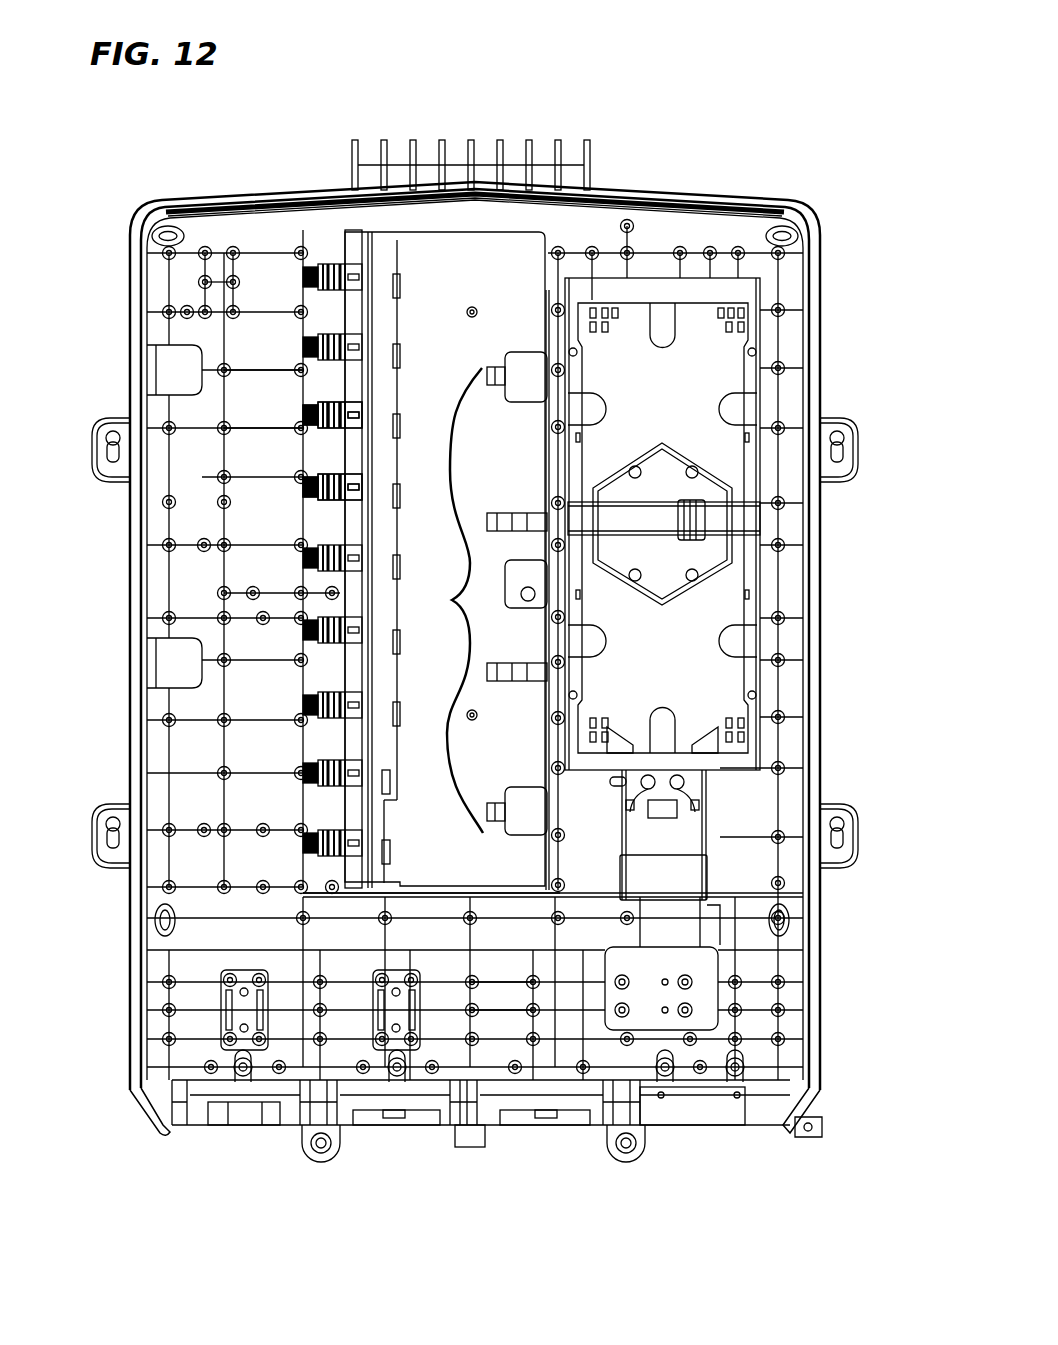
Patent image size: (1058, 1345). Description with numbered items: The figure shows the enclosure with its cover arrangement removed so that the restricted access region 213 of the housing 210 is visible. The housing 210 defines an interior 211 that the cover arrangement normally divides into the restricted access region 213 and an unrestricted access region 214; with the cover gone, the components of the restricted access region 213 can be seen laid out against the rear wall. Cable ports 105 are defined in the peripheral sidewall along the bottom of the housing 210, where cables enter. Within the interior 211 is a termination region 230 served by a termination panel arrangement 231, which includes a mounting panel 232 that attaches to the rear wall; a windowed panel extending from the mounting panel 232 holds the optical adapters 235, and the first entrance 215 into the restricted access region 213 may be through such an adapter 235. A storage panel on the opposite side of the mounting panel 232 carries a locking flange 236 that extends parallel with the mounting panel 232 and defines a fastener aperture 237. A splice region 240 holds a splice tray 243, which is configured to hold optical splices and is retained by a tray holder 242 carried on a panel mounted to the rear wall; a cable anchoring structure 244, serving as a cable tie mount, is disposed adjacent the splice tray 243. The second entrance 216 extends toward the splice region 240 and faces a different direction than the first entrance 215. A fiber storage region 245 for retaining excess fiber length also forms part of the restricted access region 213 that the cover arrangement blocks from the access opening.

The cable port 105 is at (218, 1130).
The housing 210 is at (818, 662).
The interior 211 is at (497, 1022).
The restricted access region 213 is at (792, 222).
The unrestricted access region 214 is at (261, 355).
The first entrance 215 is at (293, 703).
The second entrance 216 is at (664, 914).
The termination region 230 is at (316, 522).
The termination panel arrangement 231 is at (430, 905).
The mounting panel 232 is at (445, 559).
The adapter 235 is at (348, 410).
The locking flange 236 is at (530, 575).
The fastener aperture 237 is at (521, 596).
The splice region 240 is at (764, 389).
The tray holder 242 is at (652, 835).
The splice tray 243 is at (662, 528).
The cable anchoring structure 244 is at (628, 525).
The fiber storage region 245 is at (473, 593).